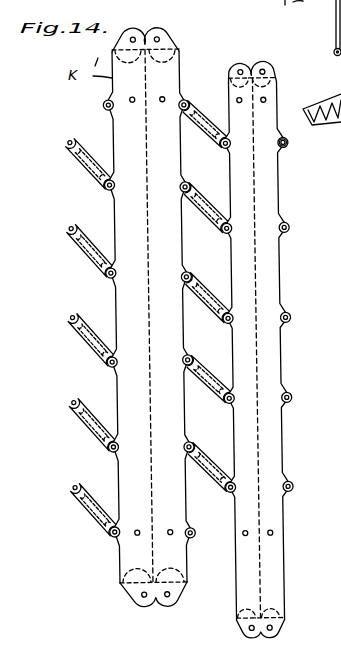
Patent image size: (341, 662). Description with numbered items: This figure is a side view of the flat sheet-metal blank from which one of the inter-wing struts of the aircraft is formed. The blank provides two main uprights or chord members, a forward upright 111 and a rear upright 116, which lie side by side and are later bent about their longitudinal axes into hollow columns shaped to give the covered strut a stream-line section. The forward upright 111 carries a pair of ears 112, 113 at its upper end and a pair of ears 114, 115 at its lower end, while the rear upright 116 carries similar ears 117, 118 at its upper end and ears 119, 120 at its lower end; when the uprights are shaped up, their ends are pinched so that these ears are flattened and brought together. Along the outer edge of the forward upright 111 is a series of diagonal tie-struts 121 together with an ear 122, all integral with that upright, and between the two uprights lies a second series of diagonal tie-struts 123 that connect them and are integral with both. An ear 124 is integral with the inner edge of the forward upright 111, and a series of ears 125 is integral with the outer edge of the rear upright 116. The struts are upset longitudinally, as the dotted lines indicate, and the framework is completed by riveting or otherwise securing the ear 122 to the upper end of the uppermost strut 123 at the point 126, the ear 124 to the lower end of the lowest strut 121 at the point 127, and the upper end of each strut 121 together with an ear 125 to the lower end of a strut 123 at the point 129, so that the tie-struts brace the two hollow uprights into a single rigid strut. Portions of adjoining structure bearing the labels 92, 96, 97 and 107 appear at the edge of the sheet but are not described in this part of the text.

The adjacent figure element 92 is at (270, 6).
The toothed member 96 is at (322, 122).
The adjacent figure element 97 is at (290, 22).
The rod 107 is at (335, 33).
The forward main upright 111 is at (125, 210).
The ear 112 is at (131, 30).
The ear 113 is at (176, 26).
The ear 114 is at (137, 604).
The ear 115 is at (169, 605).
The rear main upright 116 is at (263, 277).
The ear 117 is at (238, 61).
The ear 118 is at (273, 64).
The ear 119 is at (242, 636).
The ear 120 is at (277, 632).
The diagonal tie-struts 121 is at (83, 172).
The ear 122 is at (104, 108).
The diagonal tie-struts 123 is at (208, 198).
The ear 124 is at (190, 531).
The ears 125 is at (284, 225).
The riveting point 126 is at (185, 100).
The riveting point 127 is at (112, 538).
The riveting point 129 is at (300, 124).